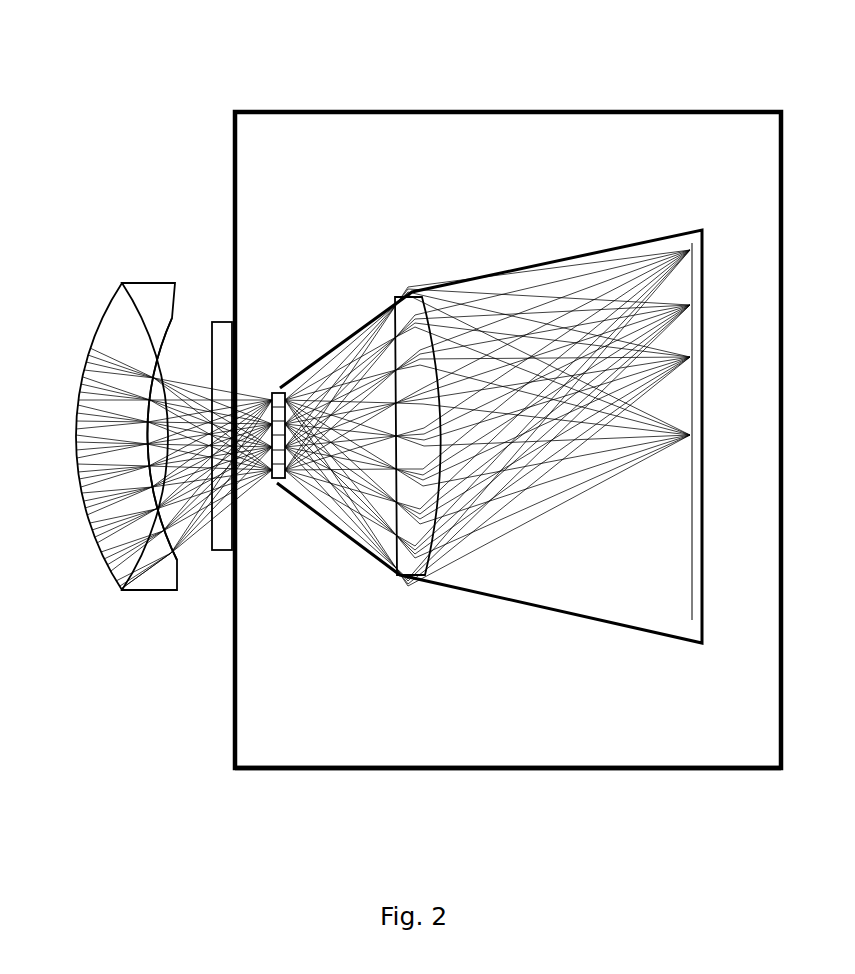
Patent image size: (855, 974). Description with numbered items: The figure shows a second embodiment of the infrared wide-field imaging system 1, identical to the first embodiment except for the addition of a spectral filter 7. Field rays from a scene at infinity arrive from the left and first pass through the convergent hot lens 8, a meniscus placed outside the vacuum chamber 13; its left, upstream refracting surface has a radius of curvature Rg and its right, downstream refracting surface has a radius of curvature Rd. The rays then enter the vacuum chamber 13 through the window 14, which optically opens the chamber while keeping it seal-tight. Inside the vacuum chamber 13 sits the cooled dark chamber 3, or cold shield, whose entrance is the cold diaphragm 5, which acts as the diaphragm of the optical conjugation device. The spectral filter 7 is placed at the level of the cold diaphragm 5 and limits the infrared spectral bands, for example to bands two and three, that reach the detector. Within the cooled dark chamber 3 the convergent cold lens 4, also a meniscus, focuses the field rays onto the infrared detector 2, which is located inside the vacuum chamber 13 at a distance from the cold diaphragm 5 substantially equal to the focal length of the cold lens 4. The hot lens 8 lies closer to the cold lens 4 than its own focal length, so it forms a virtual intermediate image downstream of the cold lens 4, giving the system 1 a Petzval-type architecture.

The wide-field imaging system 1 is at (222, 95).
The infrared detector 2 is at (692, 562).
The cooled dark chamber 3 is at (358, 547).
The convergent cold lens 4 is at (437, 518).
The cold diaphragm 5 is at (276, 390).
The spectral filter 7 is at (310, 393).
The convergent hot lens 8 is at (105, 313).
The vacuum chamber 13 is at (492, 772).
The window 14 is at (226, 322).
The radius of curvature of the right refracting surface Rd is at (172, 318).
The radius of curvature of the left refracting surface Rg is at (93, 340).